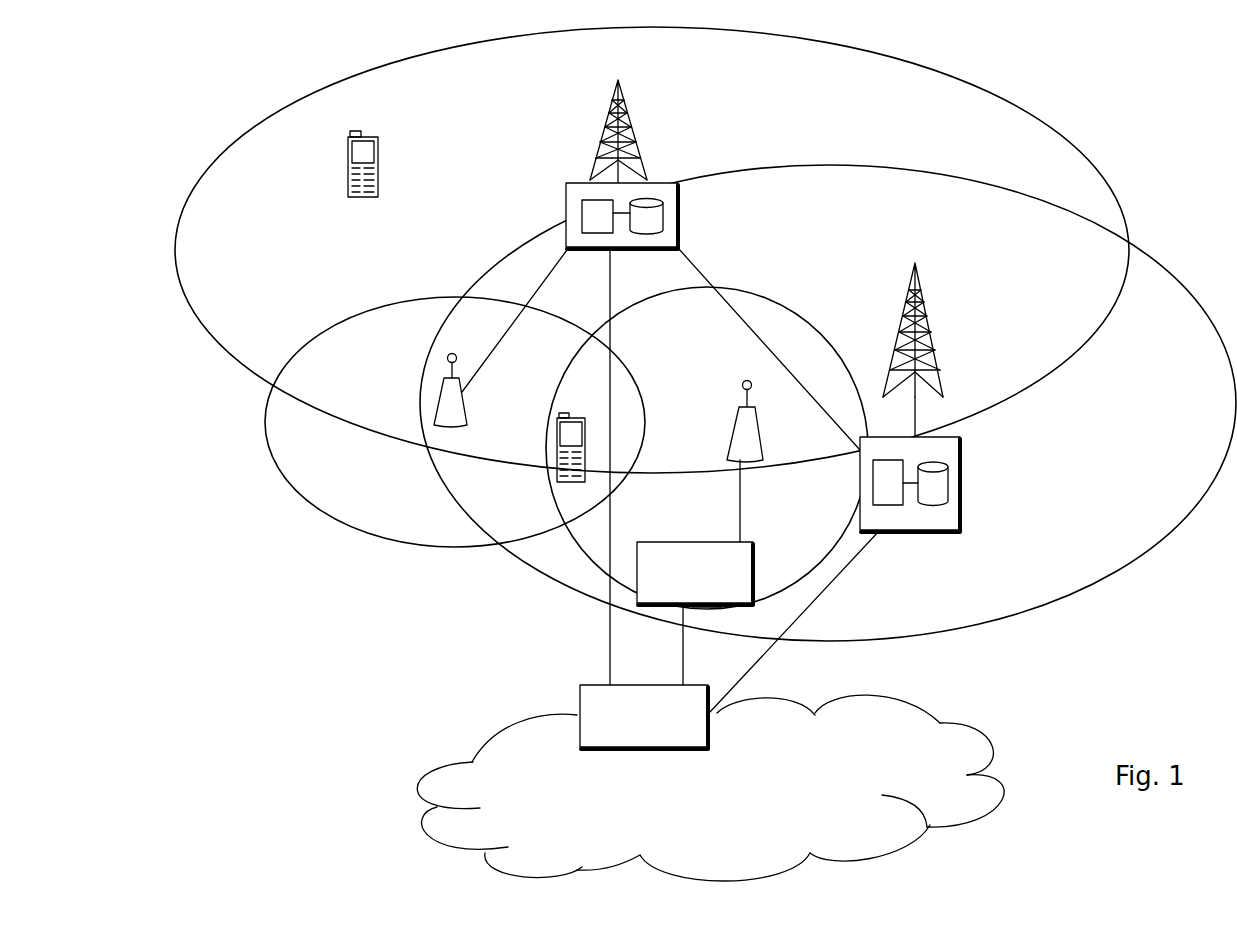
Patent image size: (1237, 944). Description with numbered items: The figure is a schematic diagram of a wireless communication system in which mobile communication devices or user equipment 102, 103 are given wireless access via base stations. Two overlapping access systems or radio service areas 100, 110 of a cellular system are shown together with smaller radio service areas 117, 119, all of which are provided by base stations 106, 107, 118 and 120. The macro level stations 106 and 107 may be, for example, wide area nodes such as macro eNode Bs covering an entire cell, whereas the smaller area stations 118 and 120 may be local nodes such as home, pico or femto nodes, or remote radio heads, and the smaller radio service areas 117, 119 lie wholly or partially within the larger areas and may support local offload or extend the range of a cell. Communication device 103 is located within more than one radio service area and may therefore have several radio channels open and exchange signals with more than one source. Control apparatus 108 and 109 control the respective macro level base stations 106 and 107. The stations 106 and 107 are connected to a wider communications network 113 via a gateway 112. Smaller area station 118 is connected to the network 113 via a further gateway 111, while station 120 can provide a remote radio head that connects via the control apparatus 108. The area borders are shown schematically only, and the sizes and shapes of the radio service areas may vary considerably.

The radio service area 100 is at (273, 117).
The mobile communication device 102 is at (348, 180).
The mobile communication device 103 is at (553, 462).
The base station 106 is at (601, 143).
The base station 107 is at (937, 352).
The control apparatus 108 is at (565, 202).
The control apparatus 109 is at (952, 512).
The radio service area 110 is at (1162, 553).
The gateway 111 is at (643, 580).
The gateway 112 is at (583, 685).
The wider communications network 113 is at (505, 758).
The smaller radio service area 117 is at (778, 303).
The base station 118 is at (748, 442).
The smaller radio service area 119 is at (352, 515).
The base station 120 is at (438, 396).